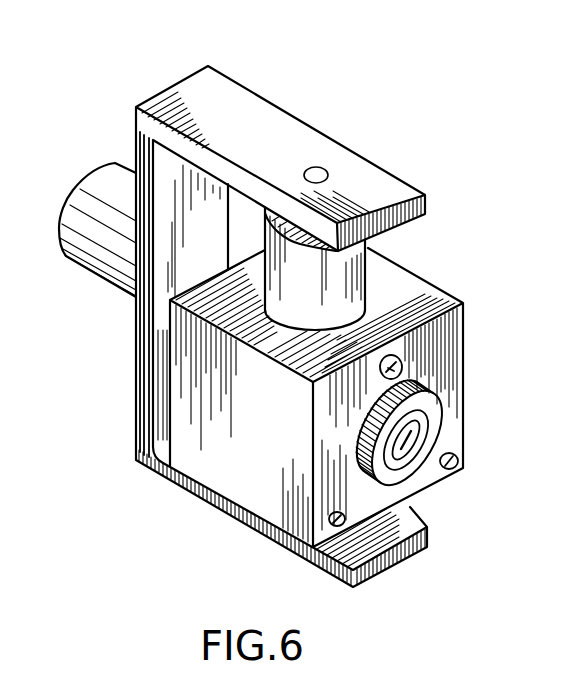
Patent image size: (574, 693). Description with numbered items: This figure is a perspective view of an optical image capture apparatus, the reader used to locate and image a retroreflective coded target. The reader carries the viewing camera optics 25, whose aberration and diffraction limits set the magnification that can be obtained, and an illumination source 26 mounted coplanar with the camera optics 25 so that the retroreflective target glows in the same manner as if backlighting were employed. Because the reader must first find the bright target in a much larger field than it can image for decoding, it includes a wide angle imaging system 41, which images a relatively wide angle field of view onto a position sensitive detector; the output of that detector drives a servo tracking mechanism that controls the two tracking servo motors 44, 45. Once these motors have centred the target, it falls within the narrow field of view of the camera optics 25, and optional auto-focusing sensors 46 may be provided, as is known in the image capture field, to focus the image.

The tracking servo motor 44 is at (76, 194).
The tracking servo motor 45 is at (348, 292).
The wide angle imaging system 41 is at (403, 367).
The camera optics 25 is at (430, 434).
The illumination source 26 is at (353, 424).
The auto-focusing sensors 46 is at (455, 468).